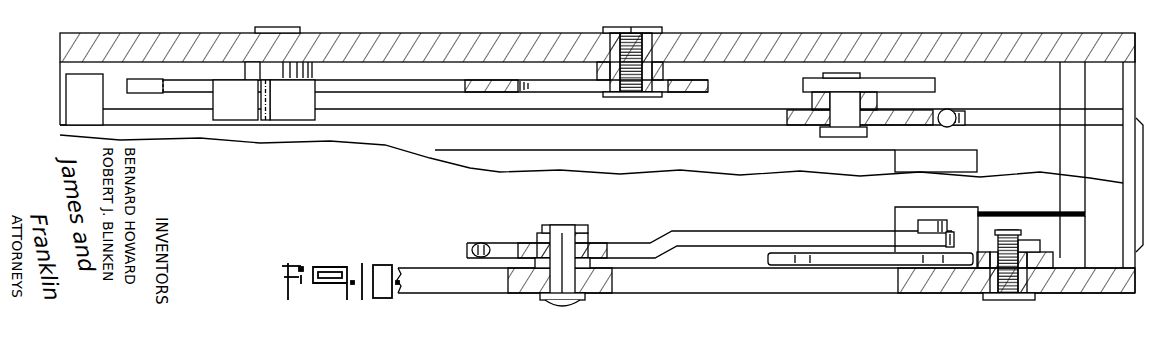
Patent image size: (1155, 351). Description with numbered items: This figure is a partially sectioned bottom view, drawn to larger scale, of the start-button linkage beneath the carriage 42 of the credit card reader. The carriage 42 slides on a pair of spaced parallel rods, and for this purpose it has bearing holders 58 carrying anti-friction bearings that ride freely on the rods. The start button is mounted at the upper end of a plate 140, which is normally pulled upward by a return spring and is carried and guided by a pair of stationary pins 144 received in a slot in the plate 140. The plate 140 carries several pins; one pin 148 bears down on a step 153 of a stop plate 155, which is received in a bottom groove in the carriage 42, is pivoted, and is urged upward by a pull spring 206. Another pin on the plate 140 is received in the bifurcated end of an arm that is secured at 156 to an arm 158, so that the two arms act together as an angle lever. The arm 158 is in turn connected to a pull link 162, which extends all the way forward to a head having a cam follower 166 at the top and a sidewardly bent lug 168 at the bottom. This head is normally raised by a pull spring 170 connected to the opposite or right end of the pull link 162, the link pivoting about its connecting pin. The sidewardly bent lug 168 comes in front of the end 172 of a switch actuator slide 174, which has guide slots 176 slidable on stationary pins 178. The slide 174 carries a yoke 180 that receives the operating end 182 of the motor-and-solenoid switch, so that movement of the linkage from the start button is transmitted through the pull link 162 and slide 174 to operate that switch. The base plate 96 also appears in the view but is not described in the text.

The carriage 42 is at (1040, 130).
The bearing holders 58 is at (905, 213).
The base plate 96 is at (727, 40).
The plate 140 is at (818, 262).
The stationary pins 144 is at (1007, 232).
The pin 148 is at (932, 227).
The step 153 is at (946, 233).
The stop plate 155 is at (870, 242).
The securing point of arm 156 is at (912, 81).
The arm 158 is at (872, 87).
The pull link 162 is at (147, 118).
The cam follower 166 is at (63, 128).
The sidewardly bent lug 168 is at (72, 95).
The pull spring 170 is at (950, 108).
The end of switch actuator slide 172 is at (133, 84).
The switch actuator slide 174 is at (508, 80).
The guide slots 176 is at (545, 78).
The stationary pins 178 is at (667, 92).
The yoke 180 is at (228, 107).
The operating end 182 is at (266, 120).
The pull spring 206 is at (485, 244).